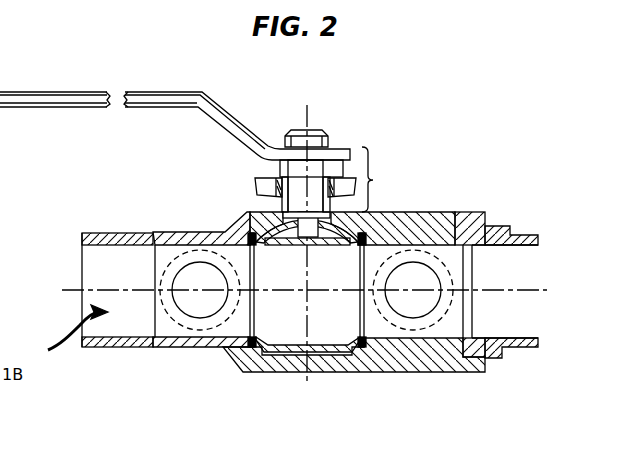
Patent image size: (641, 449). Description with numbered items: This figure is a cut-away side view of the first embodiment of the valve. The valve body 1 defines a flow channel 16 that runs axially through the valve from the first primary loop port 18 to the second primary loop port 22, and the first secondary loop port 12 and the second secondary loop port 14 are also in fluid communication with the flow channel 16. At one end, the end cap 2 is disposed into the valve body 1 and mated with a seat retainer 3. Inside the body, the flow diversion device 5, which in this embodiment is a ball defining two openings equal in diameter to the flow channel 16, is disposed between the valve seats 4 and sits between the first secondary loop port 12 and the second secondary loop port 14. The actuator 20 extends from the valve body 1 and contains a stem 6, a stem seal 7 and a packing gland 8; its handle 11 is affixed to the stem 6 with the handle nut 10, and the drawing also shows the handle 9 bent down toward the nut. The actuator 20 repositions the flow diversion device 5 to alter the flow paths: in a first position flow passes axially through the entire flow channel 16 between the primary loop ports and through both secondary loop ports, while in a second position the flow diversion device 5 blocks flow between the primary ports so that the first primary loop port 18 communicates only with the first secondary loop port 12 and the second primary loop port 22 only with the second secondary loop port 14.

The valve body 1 is at (400, 212).
The end cap 2 is at (487, 232).
The seat retainer 3 is at (440, 227).
The valve seats 4 is at (240, 353).
The flow diversion device 5 is at (248, 230).
The stem 6 is at (297, 170).
The stem seal 7 is at (273, 202).
The packing gland 8 is at (272, 176).
The handle 9 is at (220, 113).
The handle nut 10 is at (318, 142).
The handle 11 is at (72, 92).
The first secondary loop port 12 is at (437, 322).
The second secondary loop port 14 is at (180, 323).
The flow channel 16 is at (72, 335).
The first primary loop port 18 is at (508, 262).
The actuator 20 is at (381, 179).
The second primary loop port 22 is at (108, 257).